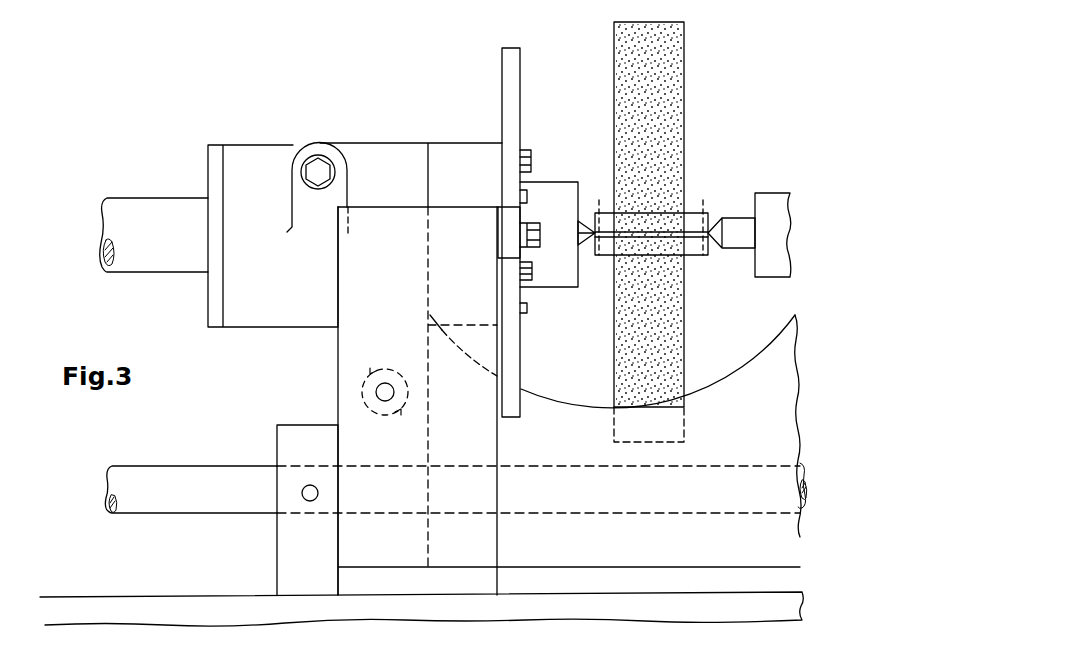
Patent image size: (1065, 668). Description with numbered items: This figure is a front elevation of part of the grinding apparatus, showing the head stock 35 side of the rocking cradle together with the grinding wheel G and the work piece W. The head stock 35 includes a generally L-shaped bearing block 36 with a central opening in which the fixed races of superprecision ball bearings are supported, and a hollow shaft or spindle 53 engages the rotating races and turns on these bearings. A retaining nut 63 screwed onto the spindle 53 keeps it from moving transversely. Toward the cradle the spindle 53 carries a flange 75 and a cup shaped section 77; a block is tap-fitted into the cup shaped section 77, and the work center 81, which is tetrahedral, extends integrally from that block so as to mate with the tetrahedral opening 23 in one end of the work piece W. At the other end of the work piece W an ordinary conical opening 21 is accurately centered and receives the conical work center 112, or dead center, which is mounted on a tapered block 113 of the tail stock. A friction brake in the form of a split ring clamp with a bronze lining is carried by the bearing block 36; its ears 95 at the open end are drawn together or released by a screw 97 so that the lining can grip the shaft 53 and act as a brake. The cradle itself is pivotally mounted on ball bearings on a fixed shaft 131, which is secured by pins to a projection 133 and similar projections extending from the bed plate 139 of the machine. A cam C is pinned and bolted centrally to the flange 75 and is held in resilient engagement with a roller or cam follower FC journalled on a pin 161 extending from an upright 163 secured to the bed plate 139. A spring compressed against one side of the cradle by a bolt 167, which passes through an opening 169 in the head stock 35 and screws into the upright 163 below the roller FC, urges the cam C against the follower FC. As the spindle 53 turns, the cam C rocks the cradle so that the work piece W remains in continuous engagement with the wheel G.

The conical opening 21 is at (709, 217).
The tetrahedral opening 23 is at (597, 217).
The head stock 35 is at (437, 108).
The bearing block 36 is at (385, 152).
The shaft or spindle 53 is at (158, 206).
The retaining nut 63 is at (213, 149).
The flange 75 is at (440, 147).
The cup shaped section 77 is at (552, 187).
The work center 81 is at (593, 252).
The ears 95 is at (296, 169).
The screw 97 is at (321, 166).
The work center (dead center) 112 is at (717, 221).
The tapered block 113 is at (760, 195).
The fixed shaft 131 is at (177, 471).
The projection 133 is at (284, 431).
The bed plate 139 is at (195, 601).
The pin 161 is at (527, 229).
The upright 163 is at (479, 211).
The bolt 167 is at (377, 375).
The opening 169 is at (387, 410).
The cam C is at (509, 53).
The roller or cam follower FC is at (511, 236).
The wheel G is at (681, 73).
The work piece W is at (692, 250).